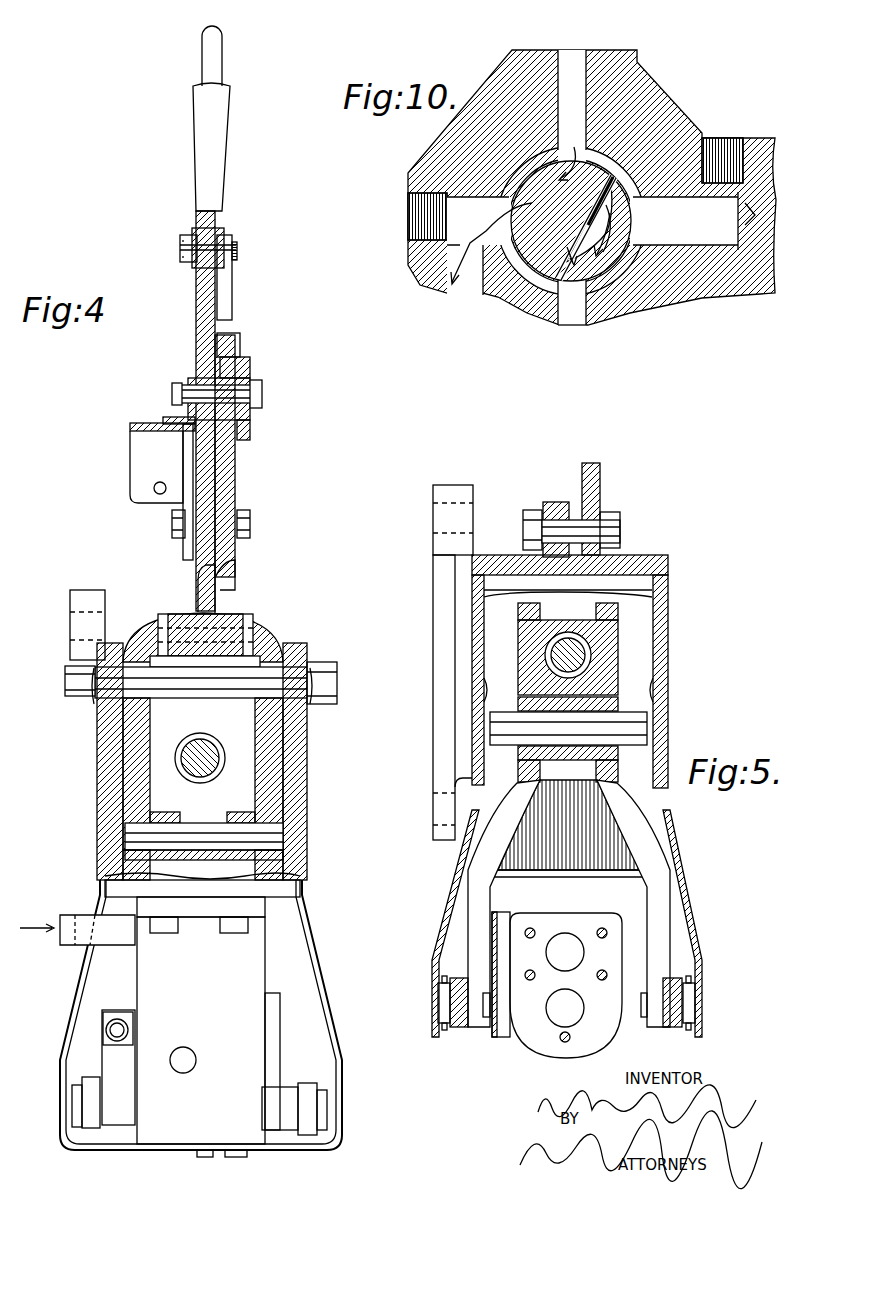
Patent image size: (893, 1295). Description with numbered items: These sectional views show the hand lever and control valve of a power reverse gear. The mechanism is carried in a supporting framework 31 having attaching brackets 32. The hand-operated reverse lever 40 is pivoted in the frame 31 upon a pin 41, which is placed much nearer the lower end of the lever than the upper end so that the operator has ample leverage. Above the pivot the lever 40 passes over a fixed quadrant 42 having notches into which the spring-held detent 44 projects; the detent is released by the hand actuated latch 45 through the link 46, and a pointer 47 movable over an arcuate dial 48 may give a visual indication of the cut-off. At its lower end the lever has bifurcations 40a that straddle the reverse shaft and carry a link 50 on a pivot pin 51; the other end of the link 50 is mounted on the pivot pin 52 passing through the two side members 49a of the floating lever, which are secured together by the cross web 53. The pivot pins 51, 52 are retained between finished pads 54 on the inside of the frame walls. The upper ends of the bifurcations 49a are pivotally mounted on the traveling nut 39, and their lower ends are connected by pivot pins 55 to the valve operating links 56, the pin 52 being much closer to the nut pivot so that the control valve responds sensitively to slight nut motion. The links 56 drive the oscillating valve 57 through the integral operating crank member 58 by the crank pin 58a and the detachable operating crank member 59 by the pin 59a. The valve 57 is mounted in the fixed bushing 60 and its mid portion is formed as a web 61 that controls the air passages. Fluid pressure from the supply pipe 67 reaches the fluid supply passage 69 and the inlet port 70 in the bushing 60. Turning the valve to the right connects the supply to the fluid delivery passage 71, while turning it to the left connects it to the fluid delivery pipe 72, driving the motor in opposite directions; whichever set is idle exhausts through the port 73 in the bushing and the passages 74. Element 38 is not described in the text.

In FIG. 5, the supporting framework 31 is at (660, 573).
In FIG. 5, the attaching brackets 32 is at (442, 543).
In FIG. 4, the shaft / bore 38 is at (213, 757).
In FIG. 5, the shaft / bore 38 is at (577, 643).
In FIG. 5, the traveling nut 39 is at (527, 628).
In FIG. 4, the hand-operated reverse lever 40 is at (201, 306).
In FIG. 4, the bifurcations 40a is at (258, 722).
In FIG. 4, the pin 41 is at (291, 670).
In FIG. 4, the fixed quadrant 42 is at (228, 490).
In FIG. 5, the fixed quadrant 42 is at (592, 473).
In FIG. 4, the spring-held detent 44 is at (252, 418).
In FIG. 4, the hand actuated latch 45 is at (193, 128).
In FIG. 4, the link 46 is at (227, 285).
In FIG. 4, the pointer 47 is at (173, 416).
In FIG. 4, the arcuate dial 48 is at (143, 422).
In FIG. 5, the side members of the floating lever 49a is at (475, 888).
In FIG. 4, the link 50 is at (165, 812).
In FIG. 5, the link 50 is at (568, 739).
In FIG. 4, the pivot pin 51 is at (202, 830).
In FIG. 5, the pivot pin 52 is at (633, 722).
In FIG. 5, the cross web 53 is at (568, 828).
In FIG. 4, the finished pads 54 is at (122, 786).
In FIG. 5, the finished pads 54 is at (487, 688).
In FIG. 5, the pivot pins 55 is at (443, 1023).
In FIG. 4, the valve operating links 56 is at (90, 1077).
In FIG. 5, the valve operating links 56 is at (458, 978).
In FIG. 4, the oscillating valve 57 is at (253, 955).
In FIG. 10, the oscillating valve 57 is at (608, 263).
In FIG. 4, the integral operating crank member 58 is at (272, 1012).
In FIG. 4, the crank pin 58a is at (337, 1110).
In FIG. 4, the detachable operating crank member 59 is at (123, 1053).
In FIG. 4, the pin 59a is at (70, 1107).
In FIG. 10, the fixed bushing 60 is at (530, 277).
In FIG. 10, the web 61 is at (586, 228).
In FIG. 4, the supply pipe 67 is at (72, 945).
In FIG. 10, the fluid supply passage 69 is at (575, 62).
In FIG. 10, the inlet port 70 is at (530, 215).
In FIG. 10, the fluid delivery passage 71 is at (464, 282).
In FIG. 10, the fluid delivery pipe 72 is at (694, 221).
In FIG. 10, the exhaust port 73 is at (577, 292).
In FIG. 10, the exhaust passages 74 is at (584, 320).